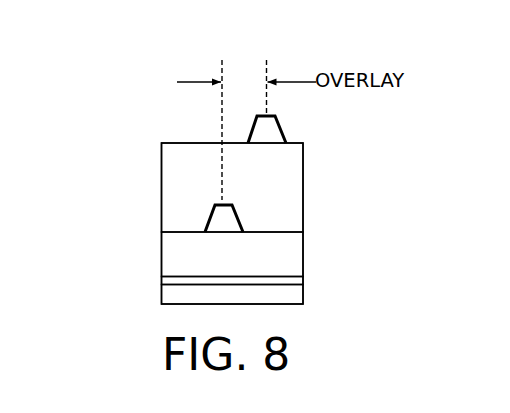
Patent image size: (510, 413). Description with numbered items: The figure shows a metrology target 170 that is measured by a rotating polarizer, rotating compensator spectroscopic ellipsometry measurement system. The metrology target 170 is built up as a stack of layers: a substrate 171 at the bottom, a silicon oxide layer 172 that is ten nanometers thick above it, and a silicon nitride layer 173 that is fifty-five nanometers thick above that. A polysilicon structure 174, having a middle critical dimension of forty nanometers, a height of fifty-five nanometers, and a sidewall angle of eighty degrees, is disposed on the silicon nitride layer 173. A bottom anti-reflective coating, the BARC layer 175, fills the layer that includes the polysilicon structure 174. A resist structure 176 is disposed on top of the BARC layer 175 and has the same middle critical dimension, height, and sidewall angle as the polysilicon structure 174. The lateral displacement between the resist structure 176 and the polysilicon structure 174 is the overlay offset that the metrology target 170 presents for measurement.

The metrology target 170 is at (60, 124).
The substrate 171 is at (161, 296).
The silicon oxide layer 172 is at (303, 278).
The silicon nitride layer 173 is at (161, 257).
The polysilicon structure 174 is at (207, 222).
The bottom anti-reflective coating (BARC) layer 175 is at (303, 185).
The resist structure 176 is at (281, 126).